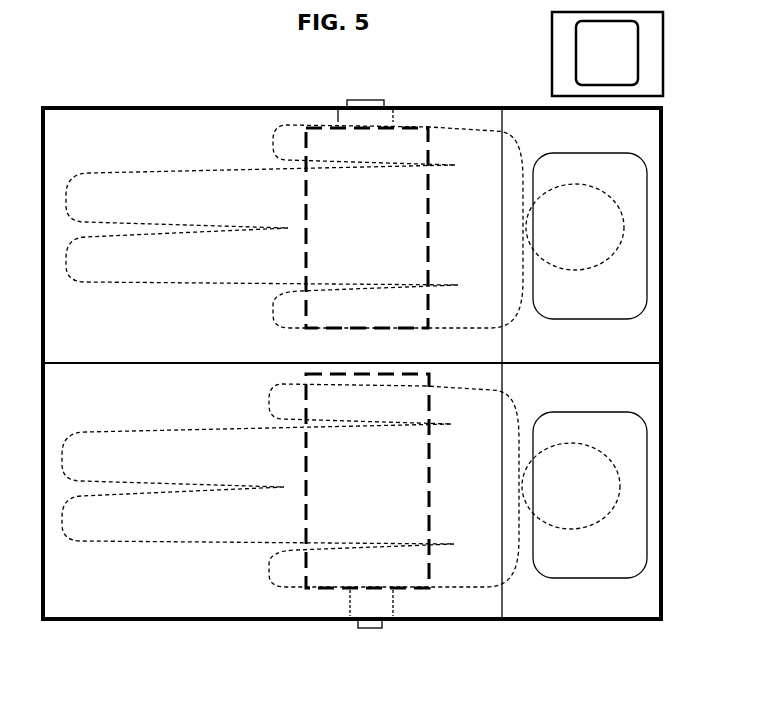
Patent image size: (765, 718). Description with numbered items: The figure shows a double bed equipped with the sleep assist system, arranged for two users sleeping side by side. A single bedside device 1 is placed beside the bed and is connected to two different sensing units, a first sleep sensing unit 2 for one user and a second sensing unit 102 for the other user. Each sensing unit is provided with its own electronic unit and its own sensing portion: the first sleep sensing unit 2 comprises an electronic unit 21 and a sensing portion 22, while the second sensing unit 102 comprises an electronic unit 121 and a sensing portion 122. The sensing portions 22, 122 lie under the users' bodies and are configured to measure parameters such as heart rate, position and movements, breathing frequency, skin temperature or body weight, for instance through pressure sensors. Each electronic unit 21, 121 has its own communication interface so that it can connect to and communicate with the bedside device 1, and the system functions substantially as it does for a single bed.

The bedside device 1 is at (633, 46).
The sleep sensing unit 2 is at (333, 106).
The electronic unit 21 is at (370, 100).
The sensing portion 22 is at (425, 219).
The sensing unit 102 is at (405, 602).
The electronic unit 121 is at (358, 628).
The sensing portion 122 is at (428, 453).